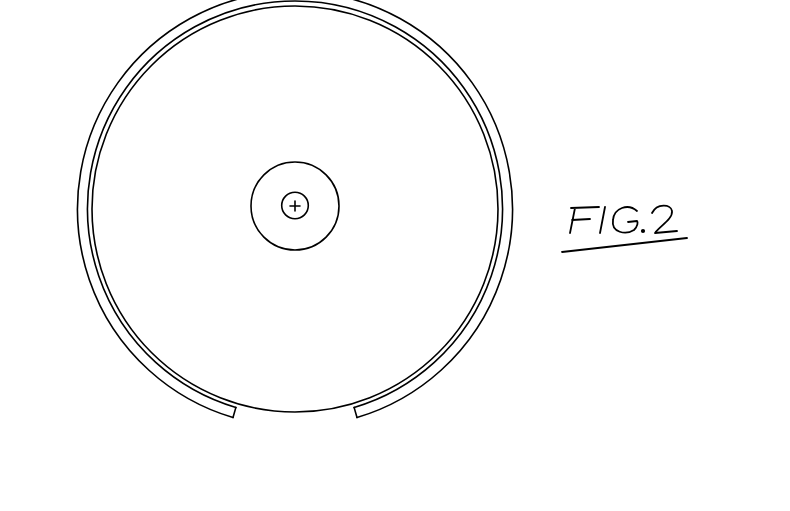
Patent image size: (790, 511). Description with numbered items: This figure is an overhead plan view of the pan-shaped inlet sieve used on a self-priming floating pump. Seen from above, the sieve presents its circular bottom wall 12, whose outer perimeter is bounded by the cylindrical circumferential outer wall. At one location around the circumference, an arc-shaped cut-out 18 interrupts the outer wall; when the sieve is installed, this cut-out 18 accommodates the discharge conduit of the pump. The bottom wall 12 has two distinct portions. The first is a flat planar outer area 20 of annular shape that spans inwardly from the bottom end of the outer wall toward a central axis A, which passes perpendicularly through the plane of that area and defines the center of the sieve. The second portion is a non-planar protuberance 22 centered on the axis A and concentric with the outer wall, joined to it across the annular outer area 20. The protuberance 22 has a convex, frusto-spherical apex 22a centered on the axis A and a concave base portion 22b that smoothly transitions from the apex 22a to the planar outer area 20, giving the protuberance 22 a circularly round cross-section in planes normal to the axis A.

The bottom wall 12 is at (400, 62).
The flat planar outer area 20 is at (450, 128).
The arc-shaped cut-out 18 is at (262, 413).
The protuberance 22 is at (290, 235).
The frusto-spherical apex 22a is at (287, 199).
The concave base portion 22b is at (324, 223).
The central axis A is at (304, 195).